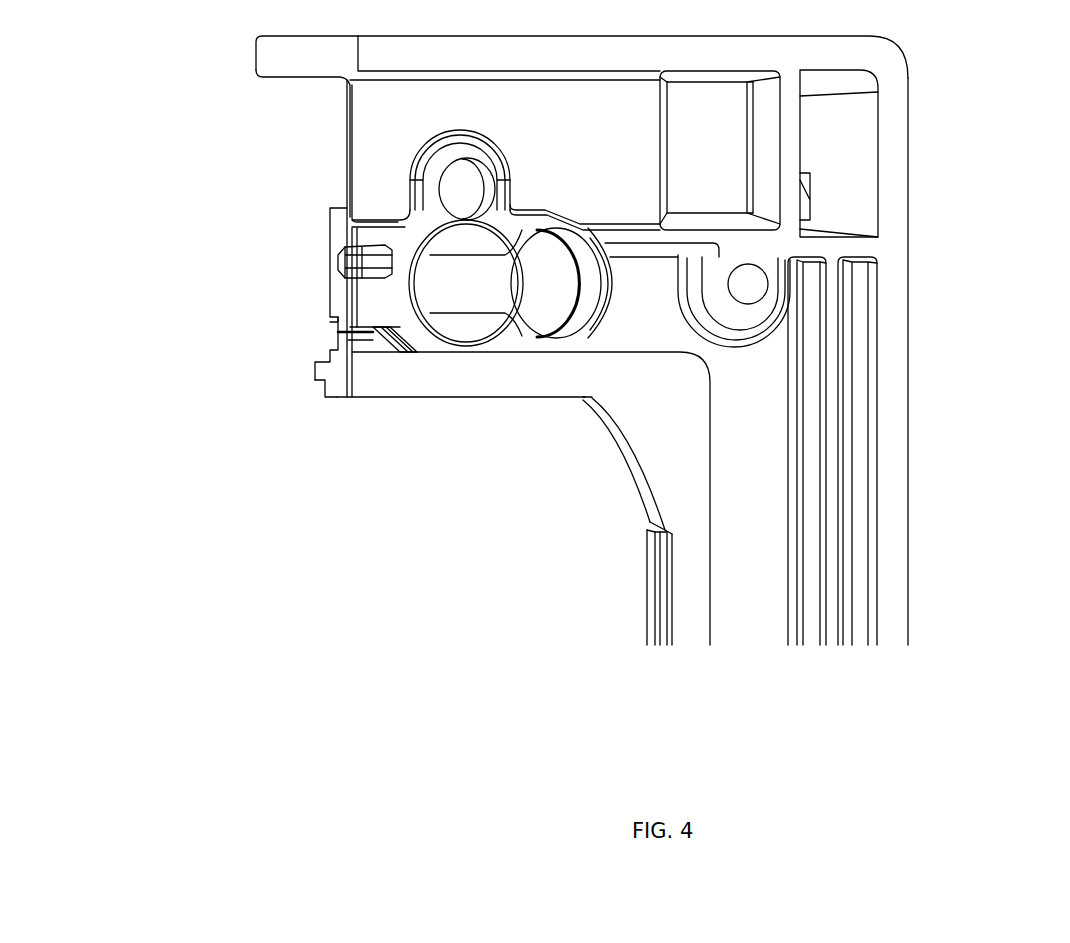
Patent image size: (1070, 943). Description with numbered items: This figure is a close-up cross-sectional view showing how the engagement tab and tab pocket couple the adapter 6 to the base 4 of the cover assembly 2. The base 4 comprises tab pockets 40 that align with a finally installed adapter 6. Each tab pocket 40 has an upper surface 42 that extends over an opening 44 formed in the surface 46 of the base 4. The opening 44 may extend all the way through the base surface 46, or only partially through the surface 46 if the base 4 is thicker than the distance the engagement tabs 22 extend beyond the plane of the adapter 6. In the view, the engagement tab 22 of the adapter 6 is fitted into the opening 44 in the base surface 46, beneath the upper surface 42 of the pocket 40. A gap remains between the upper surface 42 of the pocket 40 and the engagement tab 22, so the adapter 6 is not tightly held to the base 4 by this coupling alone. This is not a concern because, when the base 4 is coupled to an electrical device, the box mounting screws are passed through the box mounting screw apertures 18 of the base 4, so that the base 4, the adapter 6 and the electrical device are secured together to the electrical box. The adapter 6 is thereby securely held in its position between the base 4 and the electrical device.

The cover assembly 2 is at (945, 41).
The base 4 is at (890, 210).
The adapter 6 is at (640, 438).
The box mounting screw apertures 18 is at (432, 272).
The engagement tab 22 is at (331, 333).
The tab pocket 40 is at (323, 312).
The upper surface 42 is at (370, 308).
The opening 44 is at (331, 324).
The surface 46 is at (331, 393).